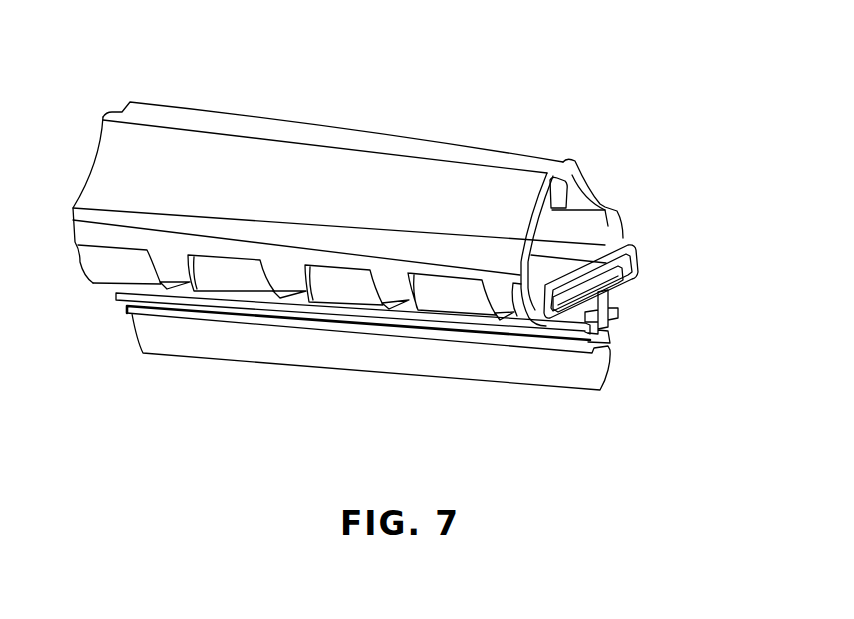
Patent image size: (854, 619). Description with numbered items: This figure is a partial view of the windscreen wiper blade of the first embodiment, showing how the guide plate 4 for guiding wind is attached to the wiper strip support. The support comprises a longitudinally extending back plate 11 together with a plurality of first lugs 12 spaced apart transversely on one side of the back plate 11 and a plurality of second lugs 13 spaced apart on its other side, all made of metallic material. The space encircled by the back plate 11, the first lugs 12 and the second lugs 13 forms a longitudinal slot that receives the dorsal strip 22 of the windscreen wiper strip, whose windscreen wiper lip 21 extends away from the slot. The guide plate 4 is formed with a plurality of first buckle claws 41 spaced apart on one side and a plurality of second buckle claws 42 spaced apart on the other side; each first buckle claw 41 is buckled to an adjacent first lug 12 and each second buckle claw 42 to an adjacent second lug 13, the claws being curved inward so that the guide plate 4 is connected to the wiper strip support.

The guide plate 4 is at (253, 124).
The first buckle claws 41 is at (500, 298).
The second buckle claws 42 is at (625, 230).
The back plate 11 is at (623, 233).
The first lugs 12 is at (590, 280).
The second lugs 13 is at (624, 289).
The windscreen wiper lip 21 is at (604, 394).
The dorsal strip 22 is at (640, 263).